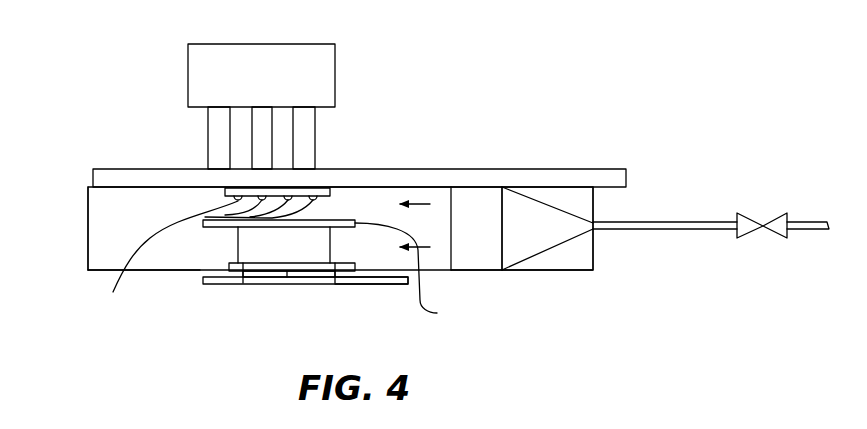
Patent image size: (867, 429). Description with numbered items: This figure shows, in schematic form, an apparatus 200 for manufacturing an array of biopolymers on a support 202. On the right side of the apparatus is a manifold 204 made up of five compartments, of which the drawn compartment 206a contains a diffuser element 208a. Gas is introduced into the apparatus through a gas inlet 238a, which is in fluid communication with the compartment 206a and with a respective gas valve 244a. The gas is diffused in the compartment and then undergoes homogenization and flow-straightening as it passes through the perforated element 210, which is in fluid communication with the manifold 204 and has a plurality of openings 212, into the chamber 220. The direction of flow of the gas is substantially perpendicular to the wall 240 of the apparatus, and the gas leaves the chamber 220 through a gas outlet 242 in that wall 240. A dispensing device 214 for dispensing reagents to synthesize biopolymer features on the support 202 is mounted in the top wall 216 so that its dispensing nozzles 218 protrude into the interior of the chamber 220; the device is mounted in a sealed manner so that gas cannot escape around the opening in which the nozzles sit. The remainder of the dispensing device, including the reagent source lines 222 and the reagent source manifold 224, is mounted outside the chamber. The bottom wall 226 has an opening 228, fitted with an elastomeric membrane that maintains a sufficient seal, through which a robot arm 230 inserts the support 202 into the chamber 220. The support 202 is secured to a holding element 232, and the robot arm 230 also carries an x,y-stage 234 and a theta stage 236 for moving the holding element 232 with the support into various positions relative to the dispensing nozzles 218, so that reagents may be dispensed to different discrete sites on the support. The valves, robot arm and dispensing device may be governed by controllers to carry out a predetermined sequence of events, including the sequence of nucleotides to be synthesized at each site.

The apparatus 200 is at (650, 116).
The support 202 is at (418, 275).
The manifold 204 is at (572, 272).
The compartment 206a is at (527, 242).
The diffuser element 208a is at (560, 197).
The perforated element 210 is at (473, 188).
The openings 212 is at (482, 246).
The dispensing device 214 is at (178, 131).
The top wall 216 is at (131, 173).
The dispensing nozzles 218 is at (206, 255).
The chamber 220 is at (120, 232).
The reagent source lines 222 is at (315, 117).
The reagent source manifold 224 is at (313, 53).
The bottom wall 226 is at (173, 273).
The opening 228 is at (229, 264).
The robot arm 230 is at (262, 281).
The holding element 232 is at (316, 235).
The x,y-stage 234 is at (385, 285).
The theta stage 236 is at (368, 285).
The gas inlet 238a is at (637, 220).
The wall 240 is at (88, 213).
The gas outlet 242 is at (100, 258).
The gas valve 244a is at (753, 215).